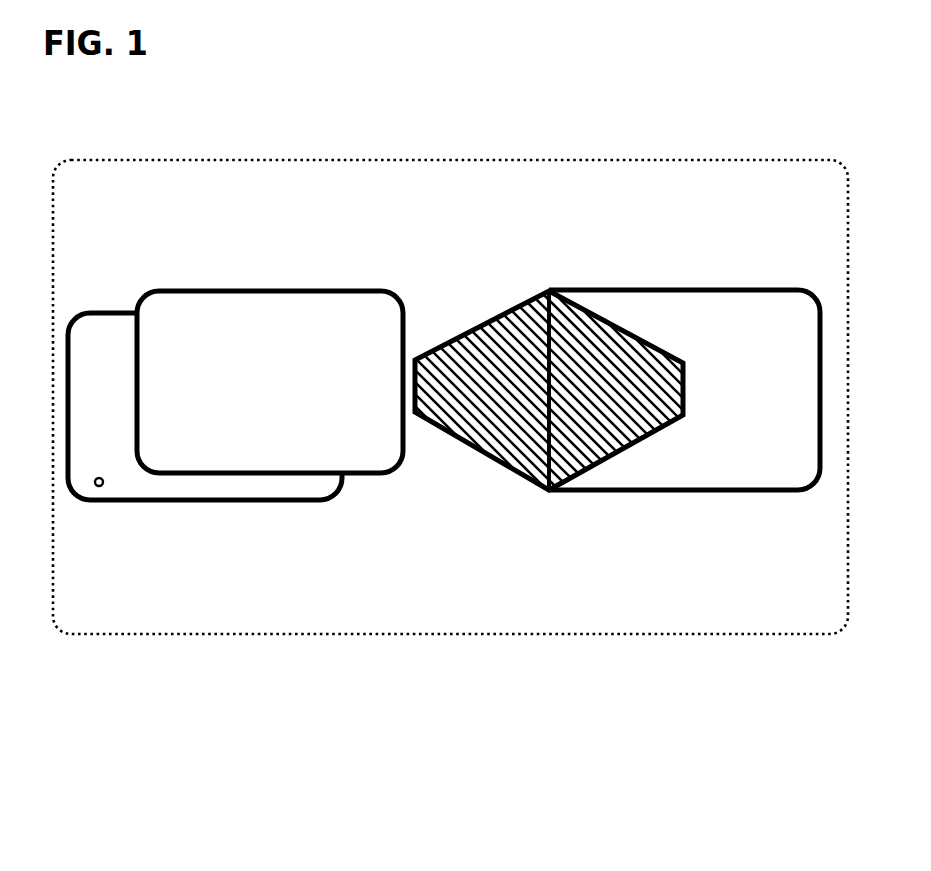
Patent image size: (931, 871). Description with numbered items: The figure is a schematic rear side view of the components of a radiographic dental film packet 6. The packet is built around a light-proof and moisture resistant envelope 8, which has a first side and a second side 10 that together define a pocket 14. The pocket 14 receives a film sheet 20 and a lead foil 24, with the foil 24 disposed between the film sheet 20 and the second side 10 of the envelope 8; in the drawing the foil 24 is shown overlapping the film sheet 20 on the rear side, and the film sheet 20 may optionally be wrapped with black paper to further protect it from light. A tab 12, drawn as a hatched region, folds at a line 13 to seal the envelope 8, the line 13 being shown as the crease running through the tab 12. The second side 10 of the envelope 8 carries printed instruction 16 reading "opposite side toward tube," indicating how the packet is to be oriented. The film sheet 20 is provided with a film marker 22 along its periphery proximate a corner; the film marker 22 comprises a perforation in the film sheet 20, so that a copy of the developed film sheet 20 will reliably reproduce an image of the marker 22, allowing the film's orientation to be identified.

The radiographic dental film packet 6 is at (487, 635).
The envelope 8 is at (763, 493).
The second side 10 is at (728, 454).
The tab 12 is at (507, 340).
The line 13 is at (549, 291).
The pocket 14 is at (633, 392).
The printed instruction 16 is at (750, 297).
The film sheet 20 is at (111, 406).
The film marker 22 is at (103, 483).
The lead foil 24 is at (248, 394).